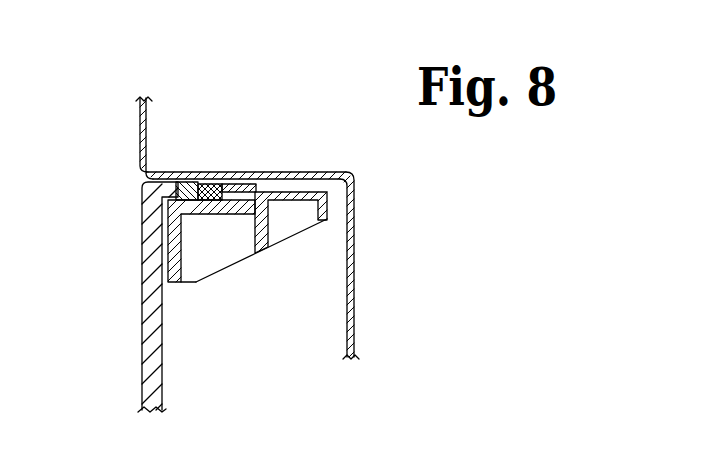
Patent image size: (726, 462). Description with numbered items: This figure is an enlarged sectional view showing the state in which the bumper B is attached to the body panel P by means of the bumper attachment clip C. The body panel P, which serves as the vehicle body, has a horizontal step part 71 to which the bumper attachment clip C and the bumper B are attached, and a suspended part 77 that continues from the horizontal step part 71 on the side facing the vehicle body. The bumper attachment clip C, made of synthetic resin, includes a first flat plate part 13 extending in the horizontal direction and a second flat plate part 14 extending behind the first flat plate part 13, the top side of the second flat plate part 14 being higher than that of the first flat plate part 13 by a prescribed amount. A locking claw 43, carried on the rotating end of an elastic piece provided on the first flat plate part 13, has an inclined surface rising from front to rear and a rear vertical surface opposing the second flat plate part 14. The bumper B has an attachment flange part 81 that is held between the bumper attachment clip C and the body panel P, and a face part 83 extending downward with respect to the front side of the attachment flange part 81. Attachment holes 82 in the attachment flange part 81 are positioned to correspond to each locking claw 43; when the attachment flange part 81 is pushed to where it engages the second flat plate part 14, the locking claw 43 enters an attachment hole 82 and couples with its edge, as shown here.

The body panel P is at (136, 129).
The bumper B is at (136, 348).
The bumper attachment clip C is at (272, 264).
The first flat plate part 13 is at (240, 214).
The second flat plate part 14 is at (297, 202).
The locking claw 43 is at (208, 182).
The horizontal step part 71 is at (310, 171).
The suspended part 77 is at (355, 276).
The attachment flange part 81 is at (240, 184).
The attachment holes 82 is at (205, 186).
The face part 83 is at (152, 283).